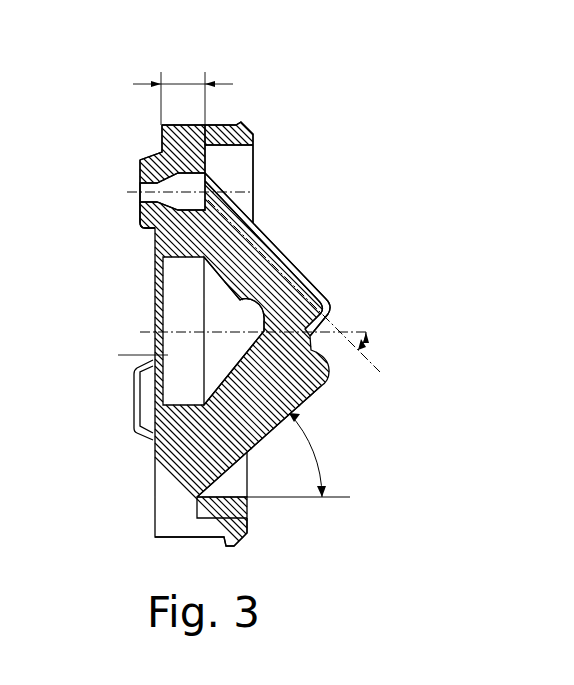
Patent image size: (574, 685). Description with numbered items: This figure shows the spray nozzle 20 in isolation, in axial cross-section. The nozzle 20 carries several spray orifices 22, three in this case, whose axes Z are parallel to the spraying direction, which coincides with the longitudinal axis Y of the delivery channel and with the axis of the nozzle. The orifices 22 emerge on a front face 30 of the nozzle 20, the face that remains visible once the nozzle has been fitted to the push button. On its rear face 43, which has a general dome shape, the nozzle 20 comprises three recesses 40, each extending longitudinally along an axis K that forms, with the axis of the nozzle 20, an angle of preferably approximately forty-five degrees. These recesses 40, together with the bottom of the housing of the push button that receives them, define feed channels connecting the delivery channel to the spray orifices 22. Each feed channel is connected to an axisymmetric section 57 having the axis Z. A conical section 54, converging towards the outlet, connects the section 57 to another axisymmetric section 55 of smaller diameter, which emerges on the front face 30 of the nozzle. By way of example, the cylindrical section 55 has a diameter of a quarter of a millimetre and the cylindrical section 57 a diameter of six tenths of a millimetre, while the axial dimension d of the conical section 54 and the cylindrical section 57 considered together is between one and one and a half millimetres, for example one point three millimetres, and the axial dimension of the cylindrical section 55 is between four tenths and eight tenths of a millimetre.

The nozzle 20 is at (157, 457).
The spray orifices 22 is at (140, 190).
The front face 30 is at (152, 514).
The recesses 40 is at (262, 237).
The rear face 43 is at (262, 438).
The conical section 54 is at (148, 227).
The axisymmetric section 55 is at (155, 150).
The axisymmetric section 57 is at (205, 131).
The axes of the spray orifices Z is at (245, 192).
The longitudinal axis of the delivery channel Y is at (242, 306).
The axis of the recess K is at (340, 330).
The axial dimension d is at (183, 90).